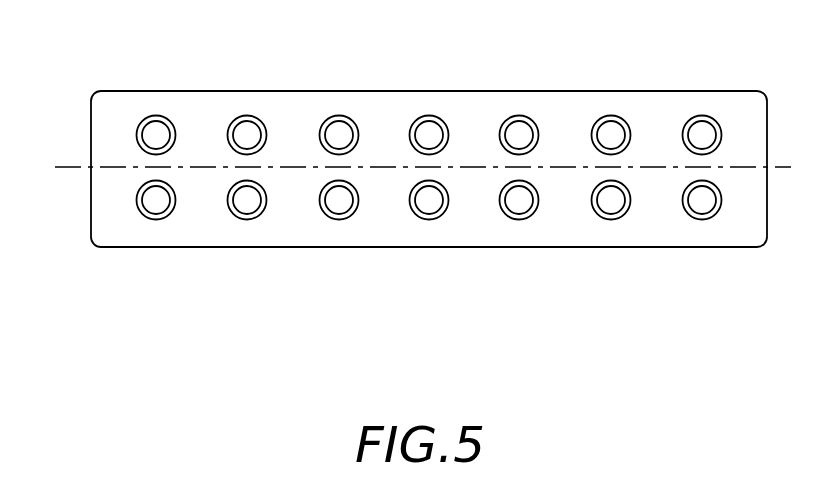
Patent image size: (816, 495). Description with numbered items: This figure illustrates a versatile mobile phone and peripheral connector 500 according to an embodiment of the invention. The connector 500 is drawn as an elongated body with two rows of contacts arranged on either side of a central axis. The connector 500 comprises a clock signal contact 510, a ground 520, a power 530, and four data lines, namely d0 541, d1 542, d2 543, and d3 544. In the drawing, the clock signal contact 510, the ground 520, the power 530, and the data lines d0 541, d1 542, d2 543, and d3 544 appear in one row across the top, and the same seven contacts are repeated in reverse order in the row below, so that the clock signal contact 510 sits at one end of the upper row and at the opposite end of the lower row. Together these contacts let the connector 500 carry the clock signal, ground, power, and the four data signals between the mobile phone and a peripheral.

The connector 500 is at (120, 135).
The clock signal contact 510 is at (152, 134).
The ground 520 is at (247, 134).
The power 530 is at (339, 131).
The data line d0 541 is at (429, 134).
The data line d1 542 is at (519, 134).
The data line d2 543 is at (611, 131).
The data line d3 544 is at (702, 134).